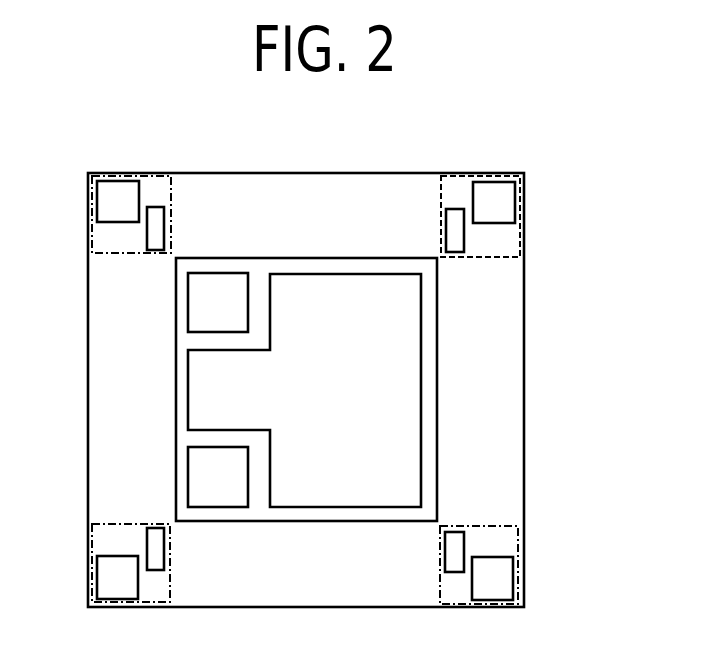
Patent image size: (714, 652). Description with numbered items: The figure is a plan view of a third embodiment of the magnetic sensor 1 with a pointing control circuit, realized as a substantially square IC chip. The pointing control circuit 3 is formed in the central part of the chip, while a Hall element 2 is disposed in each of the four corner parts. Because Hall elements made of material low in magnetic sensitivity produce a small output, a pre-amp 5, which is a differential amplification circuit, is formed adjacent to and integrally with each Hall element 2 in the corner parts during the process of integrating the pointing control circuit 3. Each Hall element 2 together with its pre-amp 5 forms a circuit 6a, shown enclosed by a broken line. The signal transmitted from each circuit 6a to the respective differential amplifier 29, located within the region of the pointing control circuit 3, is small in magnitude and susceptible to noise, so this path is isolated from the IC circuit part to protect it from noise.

The magnetic sensor 1 is at (340, 173).
The Hall element 2 is at (125, 199).
The pointing control circuit 3 is at (387, 332).
The pre-amp 5 is at (157, 237).
The circuit 6a is at (135, 176).
The differential amplifier 29 is at (220, 309).